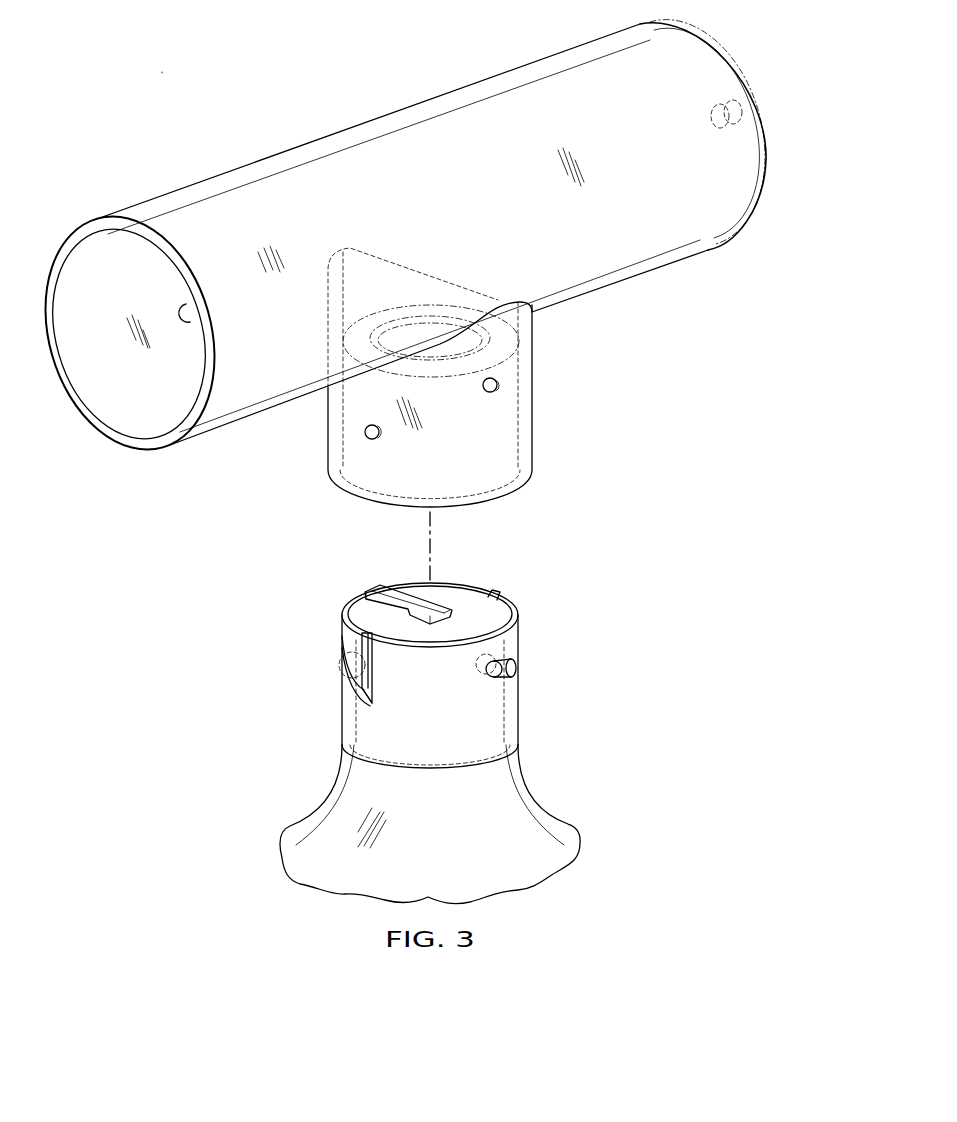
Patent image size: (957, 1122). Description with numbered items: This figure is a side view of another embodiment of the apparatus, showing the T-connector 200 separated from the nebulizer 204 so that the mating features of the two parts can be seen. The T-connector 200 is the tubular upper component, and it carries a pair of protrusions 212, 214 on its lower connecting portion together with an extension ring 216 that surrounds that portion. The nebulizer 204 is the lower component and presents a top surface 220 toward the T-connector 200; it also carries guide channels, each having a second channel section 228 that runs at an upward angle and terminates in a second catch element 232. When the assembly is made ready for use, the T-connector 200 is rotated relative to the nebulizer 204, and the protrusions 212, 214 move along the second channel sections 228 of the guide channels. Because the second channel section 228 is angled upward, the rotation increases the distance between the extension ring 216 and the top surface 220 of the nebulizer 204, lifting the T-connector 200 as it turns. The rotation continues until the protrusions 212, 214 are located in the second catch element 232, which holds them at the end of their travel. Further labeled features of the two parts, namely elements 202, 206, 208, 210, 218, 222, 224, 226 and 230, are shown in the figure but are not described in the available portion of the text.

The T-connector 200 is at (193, 108).
The tubular housing 202 is at (350, 128).
The nebulizer 204 is at (512, 575).
The opening in housing rim 206 is at (194, 312).
The hole in end cap 208 is at (712, 122).
The connector 210 is at (533, 390).
The protrusion 212 is at (362, 430).
The protrusion 214 is at (498, 383).
The extension ring 216 is at (396, 312).
The base cylinder 218 is at (518, 642).
The top surface 220 is at (412, 586).
The key end 222 is at (361, 600).
The key foot 224 is at (441, 604).
The slot 226 is at (370, 660).
The second channel section 228 is at (349, 690).
The tab 230 is at (373, 703).
The second catch element 232 is at (495, 680).